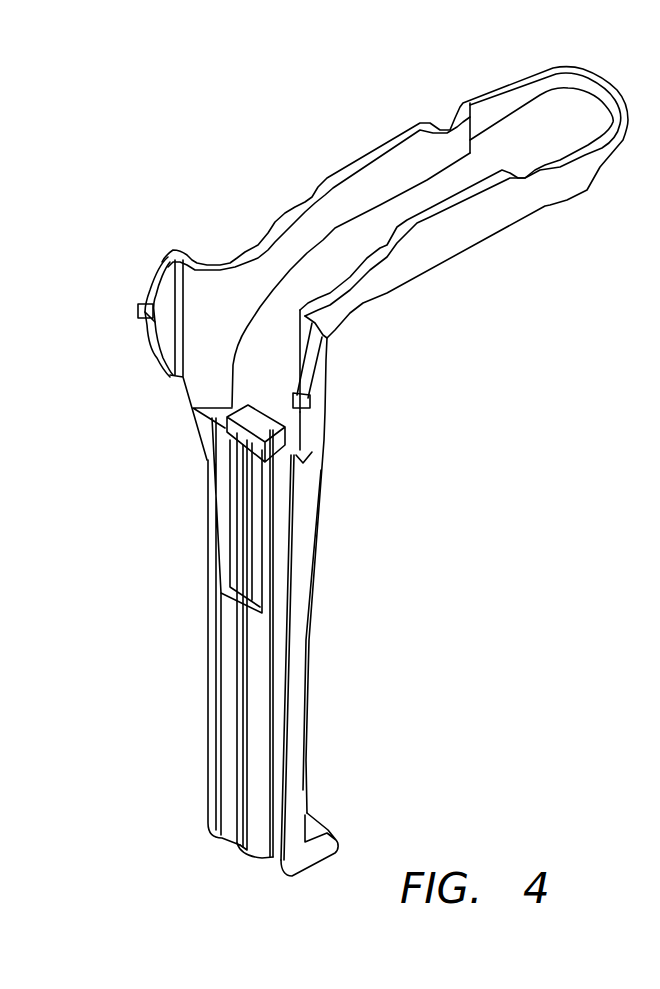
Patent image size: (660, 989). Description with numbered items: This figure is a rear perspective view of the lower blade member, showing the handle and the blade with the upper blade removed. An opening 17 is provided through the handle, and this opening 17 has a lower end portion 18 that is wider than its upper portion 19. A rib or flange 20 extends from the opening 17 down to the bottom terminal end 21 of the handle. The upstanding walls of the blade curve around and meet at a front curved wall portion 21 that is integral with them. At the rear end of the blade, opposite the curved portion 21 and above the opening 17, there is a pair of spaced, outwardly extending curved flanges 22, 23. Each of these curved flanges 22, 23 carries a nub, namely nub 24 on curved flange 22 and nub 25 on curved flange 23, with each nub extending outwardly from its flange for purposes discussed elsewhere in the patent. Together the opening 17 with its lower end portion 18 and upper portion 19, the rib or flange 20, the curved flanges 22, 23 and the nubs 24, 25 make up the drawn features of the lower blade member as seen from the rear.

The opening 17 is at (240, 582).
The lower end portion 18 is at (240, 525).
The upper portion 19 is at (243, 463).
The rib or flange 20 is at (243, 725).
The bottom terminal end 21 is at (600, 87).
The curved flange 22 is at (162, 273).
The curved flange 23 is at (320, 382).
The nub 24 is at (138, 312).
The nub 25 is at (305, 400).